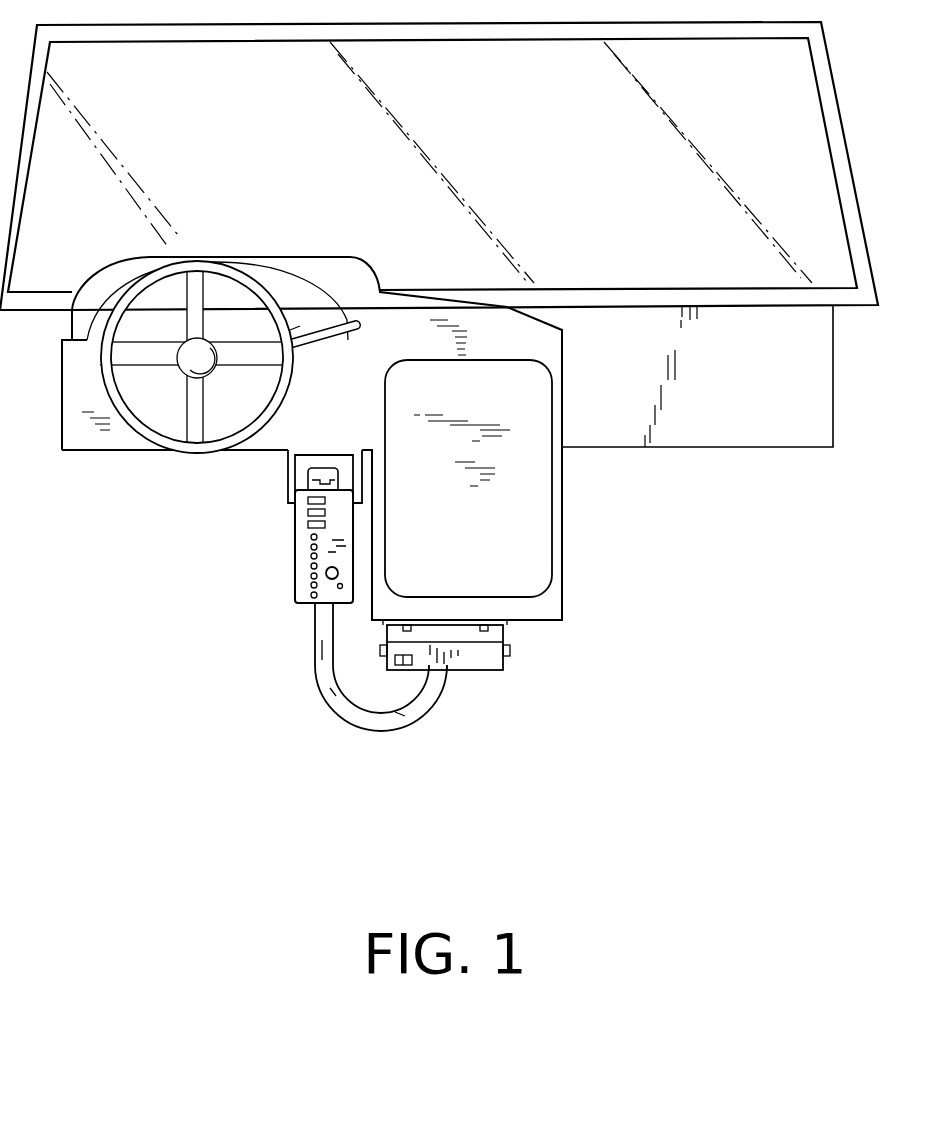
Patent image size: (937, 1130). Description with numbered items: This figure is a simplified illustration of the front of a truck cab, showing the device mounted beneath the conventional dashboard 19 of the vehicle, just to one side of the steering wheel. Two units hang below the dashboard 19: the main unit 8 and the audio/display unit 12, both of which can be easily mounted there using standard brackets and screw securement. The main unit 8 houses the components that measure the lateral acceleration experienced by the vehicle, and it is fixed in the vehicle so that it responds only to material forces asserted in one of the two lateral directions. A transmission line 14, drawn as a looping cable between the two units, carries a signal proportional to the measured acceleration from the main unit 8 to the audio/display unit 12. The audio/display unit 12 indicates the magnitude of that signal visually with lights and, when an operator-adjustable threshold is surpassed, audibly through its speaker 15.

The main unit 8 is at (480, 660).
The audio/display unit 12 is at (303, 570).
The transmission line 14 is at (377, 723).
The speaker 15 is at (337, 569).
The dashboard 19 is at (354, 409).